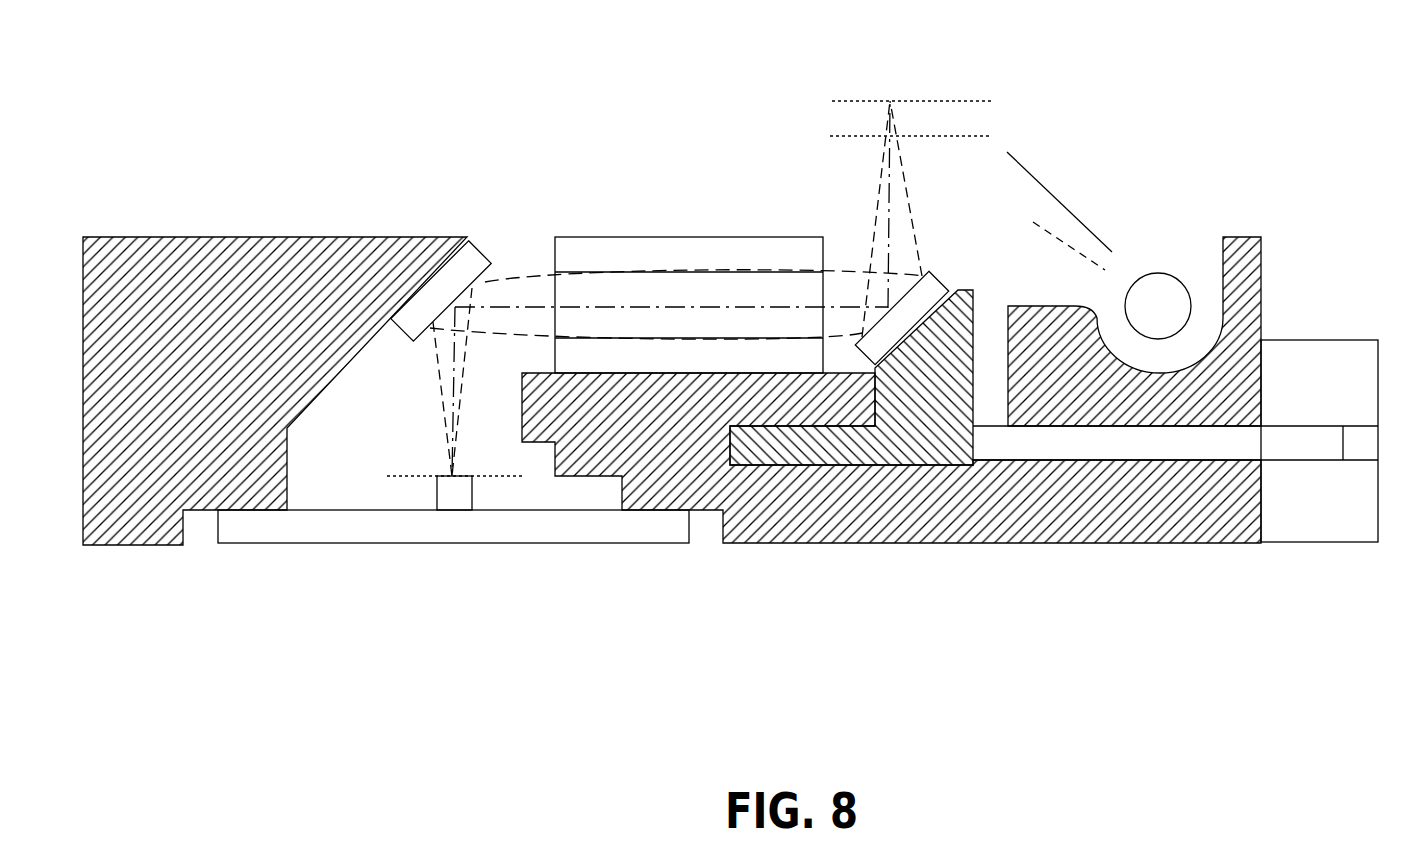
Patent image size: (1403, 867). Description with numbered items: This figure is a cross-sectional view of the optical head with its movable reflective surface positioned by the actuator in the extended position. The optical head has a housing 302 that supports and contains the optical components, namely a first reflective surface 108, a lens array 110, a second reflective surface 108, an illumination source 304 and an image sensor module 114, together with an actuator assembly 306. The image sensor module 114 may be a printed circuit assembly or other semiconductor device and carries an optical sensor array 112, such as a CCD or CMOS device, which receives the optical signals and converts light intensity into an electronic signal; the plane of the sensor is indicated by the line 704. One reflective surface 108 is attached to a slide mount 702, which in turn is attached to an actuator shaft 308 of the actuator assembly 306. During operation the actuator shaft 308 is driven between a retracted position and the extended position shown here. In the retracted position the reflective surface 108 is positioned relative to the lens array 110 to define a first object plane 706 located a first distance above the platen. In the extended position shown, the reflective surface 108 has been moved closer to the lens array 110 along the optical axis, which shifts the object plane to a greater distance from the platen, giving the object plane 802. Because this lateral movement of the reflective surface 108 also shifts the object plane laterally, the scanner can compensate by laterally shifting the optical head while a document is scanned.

The reflective surface 108 is at (478, 255).
The lens array 110 is at (648, 237).
The optical sensor array 112 is at (478, 457).
The image sensor module 114 is at (642, 560).
The housing 302 is at (1057, 548).
The illumination source 304 is at (1172, 277).
The actuator assembly 306 is at (1323, 570).
The actuator shaft 308 is at (1303, 461).
The slide mount 702 is at (890, 485).
The sample plane 704 is at (412, 474).
The first object plane 706 is at (852, 138).
The object plane 802 is at (947, 101).